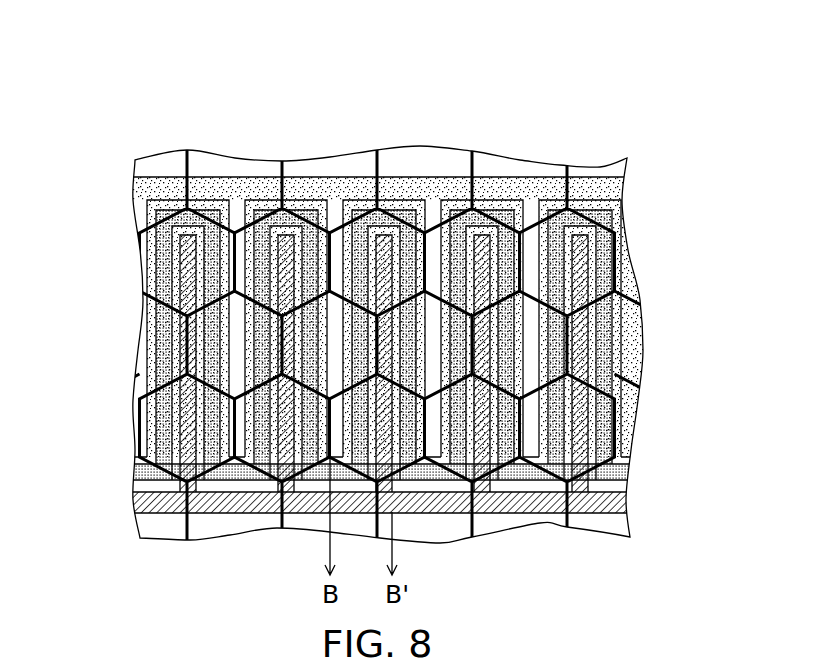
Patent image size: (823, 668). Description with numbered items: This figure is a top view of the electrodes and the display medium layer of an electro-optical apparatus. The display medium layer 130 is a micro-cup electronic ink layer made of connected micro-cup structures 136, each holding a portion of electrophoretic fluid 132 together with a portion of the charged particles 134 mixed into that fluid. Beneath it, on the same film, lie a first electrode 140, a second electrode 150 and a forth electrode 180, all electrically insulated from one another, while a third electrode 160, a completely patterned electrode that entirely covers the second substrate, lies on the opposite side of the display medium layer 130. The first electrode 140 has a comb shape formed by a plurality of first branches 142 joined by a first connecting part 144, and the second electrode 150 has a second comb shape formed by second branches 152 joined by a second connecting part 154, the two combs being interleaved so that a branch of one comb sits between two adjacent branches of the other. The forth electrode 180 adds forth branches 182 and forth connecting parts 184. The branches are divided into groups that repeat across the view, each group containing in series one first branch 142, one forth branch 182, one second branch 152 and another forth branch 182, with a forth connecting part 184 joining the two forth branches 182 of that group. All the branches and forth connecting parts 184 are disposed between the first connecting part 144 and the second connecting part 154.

The display medium layer 130 is at (339, 346).
The electrophoretic fluid 132 is at (155, 432).
The charged particles 134 is at (240, 440).
The micro-cup structures 136 is at (170, 388).
The first electrode 140 is at (355, 257).
The first branches 142 is at (183, 205).
The first connecting part 144 is at (592, 190).
The second electrode 150 is at (444, 287).
The second branches 152 is at (598, 443).
The second connecting part 154 is at (637, 501).
The third electrode 160 is at (128, 276).
The forth electrode 180 is at (339, 257).
The forth branches 182 is at (210, 265).
The forth connecting parts 184 is at (147, 190).